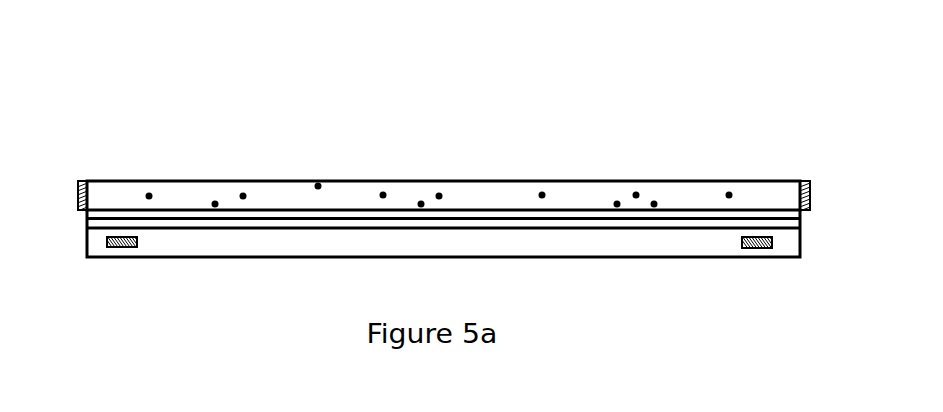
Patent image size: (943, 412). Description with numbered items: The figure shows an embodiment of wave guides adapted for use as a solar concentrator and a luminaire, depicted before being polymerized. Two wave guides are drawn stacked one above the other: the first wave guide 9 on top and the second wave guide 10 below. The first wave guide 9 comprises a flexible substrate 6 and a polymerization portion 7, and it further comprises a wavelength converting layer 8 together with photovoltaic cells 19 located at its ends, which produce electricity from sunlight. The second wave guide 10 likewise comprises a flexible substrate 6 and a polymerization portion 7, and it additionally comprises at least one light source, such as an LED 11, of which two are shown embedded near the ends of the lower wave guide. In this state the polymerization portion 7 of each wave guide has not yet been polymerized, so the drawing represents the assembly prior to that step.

The flexible substrate 6 is at (335, 242).
The polymerization portion 7 is at (427, 221).
The wavelength converting layer 8 is at (538, 190).
The first wave guide 9 is at (222, 108).
The second wave guide 10 is at (120, 283).
The LED 11 is at (137, 243).
The photovoltaic cells 19 is at (95, 185).